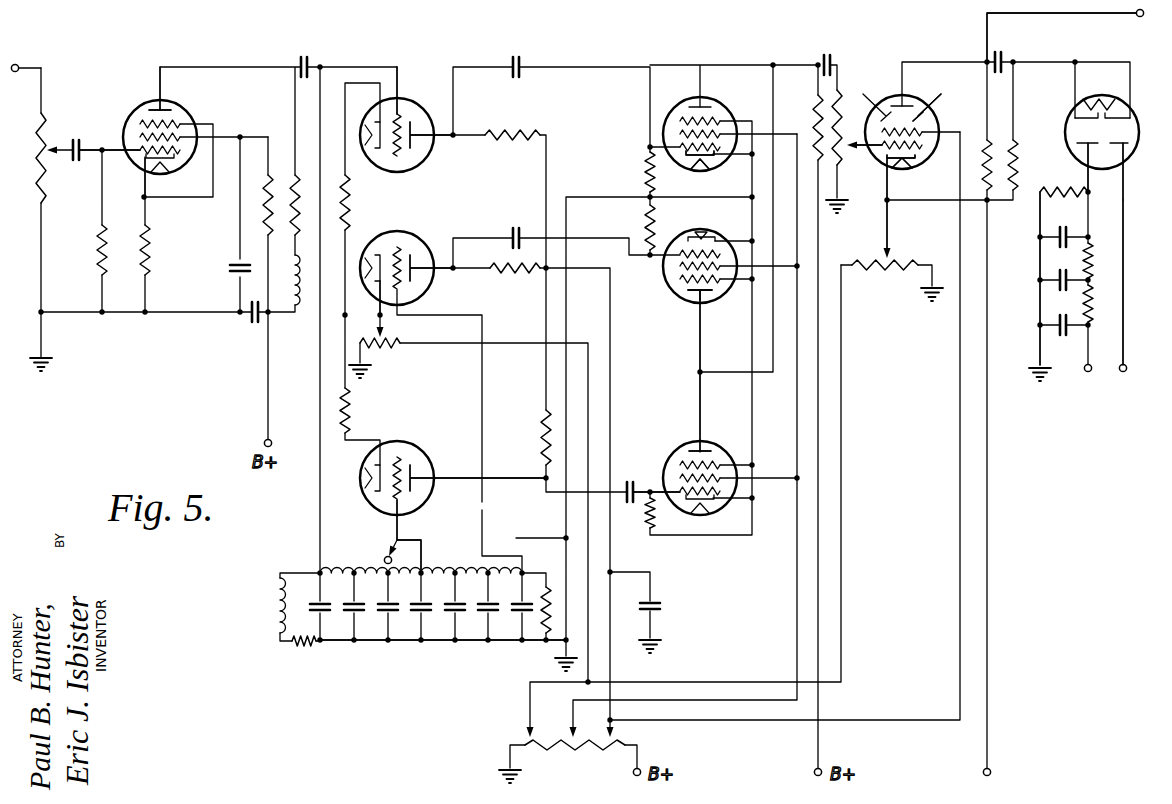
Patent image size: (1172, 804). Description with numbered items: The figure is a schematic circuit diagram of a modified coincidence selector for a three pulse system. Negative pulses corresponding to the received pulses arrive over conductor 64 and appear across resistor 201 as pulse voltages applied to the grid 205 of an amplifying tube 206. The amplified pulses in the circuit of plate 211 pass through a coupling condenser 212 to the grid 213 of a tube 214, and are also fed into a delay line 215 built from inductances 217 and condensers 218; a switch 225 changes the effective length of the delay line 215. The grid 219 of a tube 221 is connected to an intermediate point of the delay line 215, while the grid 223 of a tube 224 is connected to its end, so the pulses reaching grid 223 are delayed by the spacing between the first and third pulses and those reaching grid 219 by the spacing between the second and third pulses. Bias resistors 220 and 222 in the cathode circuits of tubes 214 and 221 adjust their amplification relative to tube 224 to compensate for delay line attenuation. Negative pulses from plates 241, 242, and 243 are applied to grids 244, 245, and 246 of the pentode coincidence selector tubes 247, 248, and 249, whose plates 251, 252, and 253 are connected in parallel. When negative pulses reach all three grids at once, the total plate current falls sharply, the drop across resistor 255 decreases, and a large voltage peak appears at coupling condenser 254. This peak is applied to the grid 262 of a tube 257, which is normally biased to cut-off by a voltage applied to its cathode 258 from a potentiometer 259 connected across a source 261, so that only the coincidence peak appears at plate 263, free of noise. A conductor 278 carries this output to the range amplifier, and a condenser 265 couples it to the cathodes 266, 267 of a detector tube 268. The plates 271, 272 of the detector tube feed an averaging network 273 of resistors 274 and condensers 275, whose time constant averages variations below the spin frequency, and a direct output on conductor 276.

The conductor 64 is at (34, 67).
The resistor 201 is at (45, 182).
The grid 205 is at (138, 150).
The amplifying tube 206 is at (140, 105).
The plate 211 is at (171, 110).
The coupling condenser 212 is at (302, 57).
The grid 213 is at (400, 112).
The tube 214 is at (433, 116).
The plate 241 is at (418, 143).
The bias resistor 220 is at (350, 200).
The tube 224 is at (408, 232).
The plate 243 is at (411, 258).
The grid 223 is at (400, 290).
The bias resistor 222 is at (355, 402).
The grid 219 is at (402, 462).
The plate 242 is at (421, 478).
The tube 221 is at (411, 508).
The switch 225 is at (392, 548).
The inductances 217 is at (365, 572).
The condensers 218 is at (355, 613).
The delay line 215 is at (375, 648).
The grid 244 is at (660, 147).
The plate 251 is at (712, 107).
The coincidence selector tube 247 is at (682, 163).
The grid 246 is at (674, 260).
The coincidence selector tube 249 is at (682, 300).
The plate 253 is at (704, 292).
The coincidence selector tube 248 is at (689, 452).
The plate 252 is at (708, 451).
The grid 245 is at (671, 490).
The coupling condenser 254 is at (827, 55).
The resistor 255 is at (816, 122).
The tube 257 is at (884, 98).
The plate 263 is at (909, 105).
The grid 262 is at (862, 165).
The cathode 258 is at (905, 168).
The potentiometer 259 is at (898, 300).
The condenser 265 is at (1001, 57).
The conductor 278 is at (1083, 16).
The cathode 267 is at (1128, 118).
The cathode 266 is at (1068, 124).
The plate 271 is at (1076, 144).
The detector tube 268 is at (1070, 181).
The plate 272 is at (1122, 164).
The condensers 275 is at (1072, 218).
The averaging network 273 is at (1028, 263).
The resistors 274 is at (1084, 266).
The conductor 276 is at (1123, 288).
The source 261 is at (586, 775).